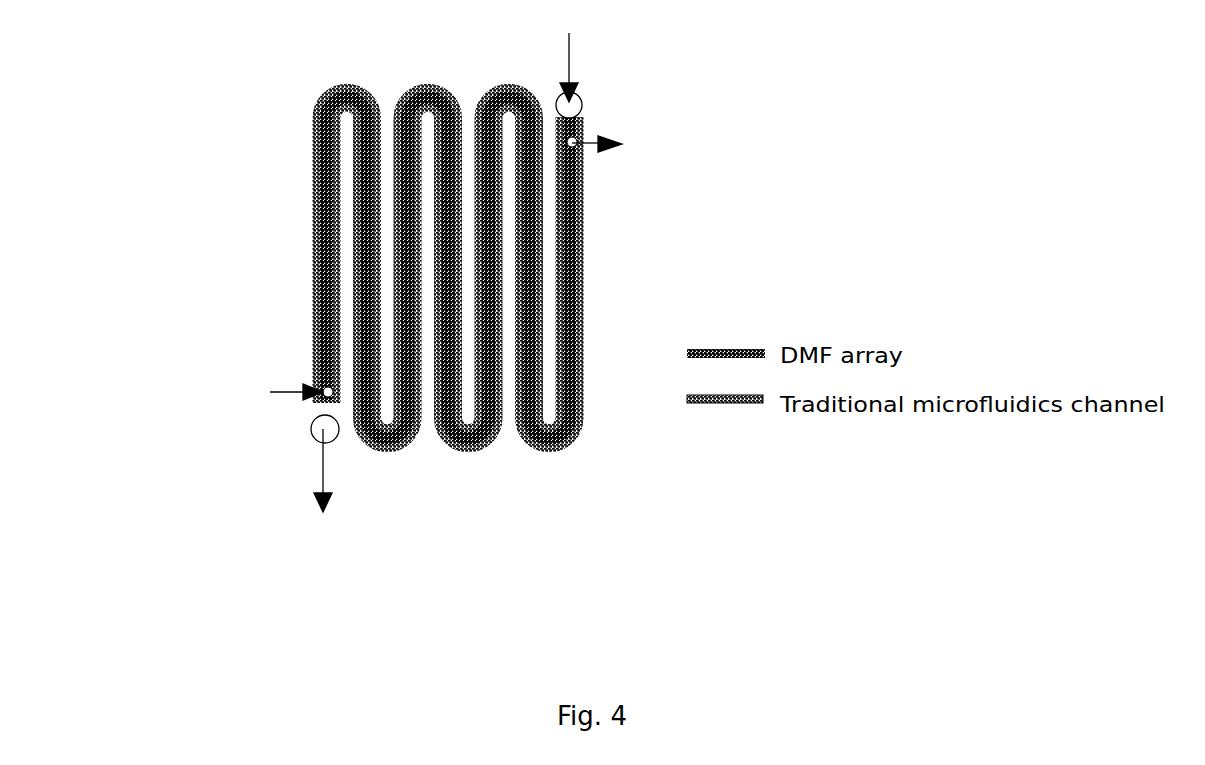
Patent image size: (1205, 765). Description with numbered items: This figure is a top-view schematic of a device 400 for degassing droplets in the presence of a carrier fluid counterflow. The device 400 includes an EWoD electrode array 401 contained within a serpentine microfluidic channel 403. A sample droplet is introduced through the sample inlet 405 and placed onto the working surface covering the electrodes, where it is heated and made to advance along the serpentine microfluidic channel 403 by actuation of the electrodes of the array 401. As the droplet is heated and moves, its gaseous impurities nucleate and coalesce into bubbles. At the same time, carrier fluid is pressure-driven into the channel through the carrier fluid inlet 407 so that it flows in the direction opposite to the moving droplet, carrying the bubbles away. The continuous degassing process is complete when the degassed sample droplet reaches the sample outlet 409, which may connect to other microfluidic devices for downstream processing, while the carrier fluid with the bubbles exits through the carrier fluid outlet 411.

The device 400 is at (476, 277).
The EWoD electrode array 401 is at (570, 315).
The serpentine microfluidic channel 403 is at (562, 425).
The sample inlet 405 is at (322, 390).
The carrier fluid inlet 407 is at (582, 102).
The sample outlet 409 is at (577, 140).
The carrier fluid outlet 411 is at (322, 430).